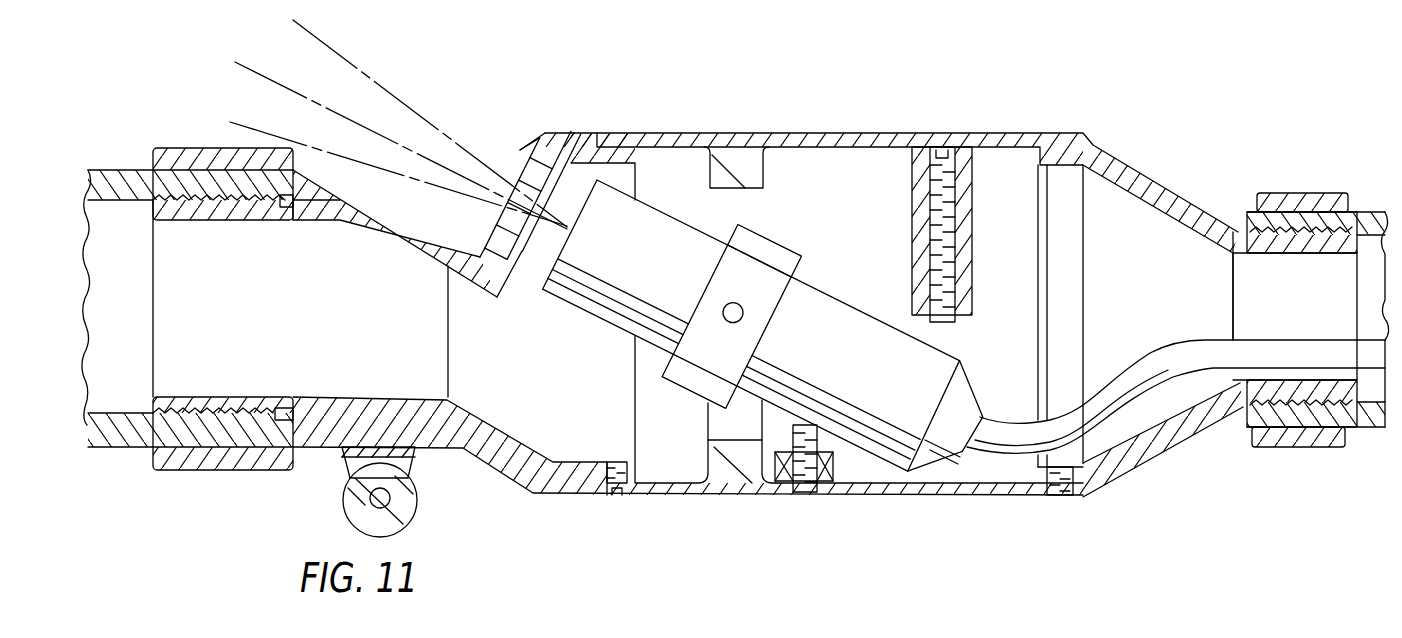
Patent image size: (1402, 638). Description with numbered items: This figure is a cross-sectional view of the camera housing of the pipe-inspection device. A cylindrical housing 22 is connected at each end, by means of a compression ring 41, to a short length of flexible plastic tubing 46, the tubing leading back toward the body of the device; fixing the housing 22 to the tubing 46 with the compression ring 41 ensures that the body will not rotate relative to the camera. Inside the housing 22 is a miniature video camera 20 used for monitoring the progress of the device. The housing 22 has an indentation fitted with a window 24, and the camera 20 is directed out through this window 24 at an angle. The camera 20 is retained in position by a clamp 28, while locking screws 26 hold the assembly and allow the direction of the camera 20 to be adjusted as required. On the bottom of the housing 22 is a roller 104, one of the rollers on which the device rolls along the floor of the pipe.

The miniature video camera 20 is at (640, 226).
The cylindrical housing 22 is at (740, 168).
The window 24 is at (510, 160).
The locking screws 26 is at (953, 237).
The clamp 28 is at (770, 256).
The compression ring 41 is at (232, 472).
The flexible plastic tubing 46 is at (102, 170).
The roller 104 is at (420, 508).